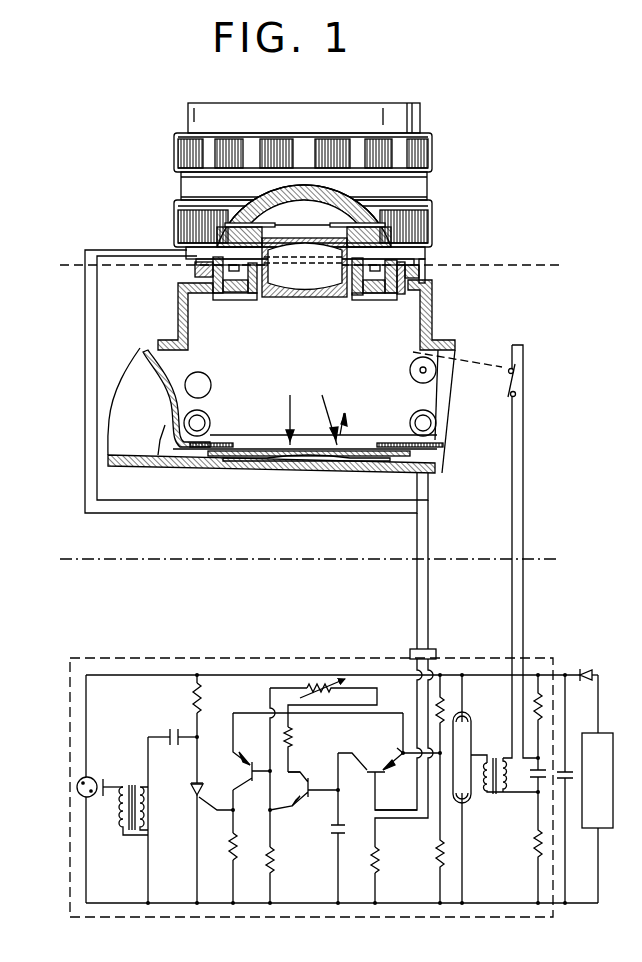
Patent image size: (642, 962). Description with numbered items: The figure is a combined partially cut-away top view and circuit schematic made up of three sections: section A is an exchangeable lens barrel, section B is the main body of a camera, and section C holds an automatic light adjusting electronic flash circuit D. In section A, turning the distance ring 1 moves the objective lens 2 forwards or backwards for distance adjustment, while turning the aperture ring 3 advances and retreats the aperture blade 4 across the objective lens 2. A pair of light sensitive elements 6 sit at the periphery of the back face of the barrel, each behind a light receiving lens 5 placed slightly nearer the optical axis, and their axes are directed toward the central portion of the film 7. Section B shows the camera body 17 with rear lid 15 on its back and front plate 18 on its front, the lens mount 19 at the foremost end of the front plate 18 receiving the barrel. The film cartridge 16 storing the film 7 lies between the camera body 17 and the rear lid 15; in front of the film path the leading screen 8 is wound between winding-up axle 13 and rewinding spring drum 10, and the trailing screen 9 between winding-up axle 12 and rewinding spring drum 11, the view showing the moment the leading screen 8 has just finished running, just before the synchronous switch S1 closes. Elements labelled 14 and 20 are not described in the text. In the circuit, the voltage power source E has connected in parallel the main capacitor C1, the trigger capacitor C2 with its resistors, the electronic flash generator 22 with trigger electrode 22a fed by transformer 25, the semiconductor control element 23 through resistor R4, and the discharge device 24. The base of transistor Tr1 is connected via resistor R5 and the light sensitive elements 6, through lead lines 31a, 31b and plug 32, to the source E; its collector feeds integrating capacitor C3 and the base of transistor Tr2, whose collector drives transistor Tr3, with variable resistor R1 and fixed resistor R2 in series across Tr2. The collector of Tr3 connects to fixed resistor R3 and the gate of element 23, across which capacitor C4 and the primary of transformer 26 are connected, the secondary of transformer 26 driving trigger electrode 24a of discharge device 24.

The distance ring 1 is at (432, 155).
The objective lens 2 is at (303, 298).
The aperture ring 3 is at (433, 224).
The aperture blade 4 is at (282, 232).
The light receiving lens 5 is at (254, 300).
The light sensitive element 6 is at (197, 270).
The film 7 is at (349, 440).
The leading screen 8 is at (250, 440).
The trailing screen 9 is at (318, 438).
The rewinding spring drum 10 is at (206, 425).
The rewinding spring drum 11 is at (212, 386).
The winding-up axle 12 is at (437, 424).
The winding-up axle 13 is at (411, 368).
The film 14 is at (370, 450).
The rear lid 15 is at (306, 472).
The film cartridge 16 is at (126, 386).
The camera body 17 is at (152, 348).
The front plate 18 is at (433, 308).
The lens mount 19 is at (422, 272).
The electrode terminal 20 is at (201, 450).
The electronic flash generator 22 is at (468, 806).
The trigger electrode 22a is at (475, 753).
The semiconductor control element 23 is at (195, 793).
The discharge device 24 is at (77, 787).
The trigger electrode 24a is at (106, 778).
The transformer 25 is at (492, 795).
The transformer 26 is at (124, 832).
The lead line 31a is at (431, 600).
The lead line 31b is at (414, 600).
The plug 32 is at (436, 650).
The synchronous switch S1 is at (505, 386).
The variable resistor R1 is at (322, 686).
The fixed resistor R2 is at (292, 738).
The fixed resistor R3 is at (229, 842).
The resistor R4 is at (204, 712).
The resistor R5 is at (437, 846).
The main capacitor C1 is at (564, 768).
The trigger capacitor C2 is at (540, 780).
The integrating capacitor C3 is at (340, 832).
The capacitor C4 is at (170, 729).
The transistor Tr1 is at (375, 762).
The transistor Tr2 is at (308, 790).
The transistor Tr3 is at (248, 768).
The voltage power source E is at (596, 786).
The exchangeable lens barrel section A is at (490, 209).
The camera main body section B is at (550, 417).
The electronic flash circuit section C is at (545, 606).
The electronic flash circuit D is at (216, 658).